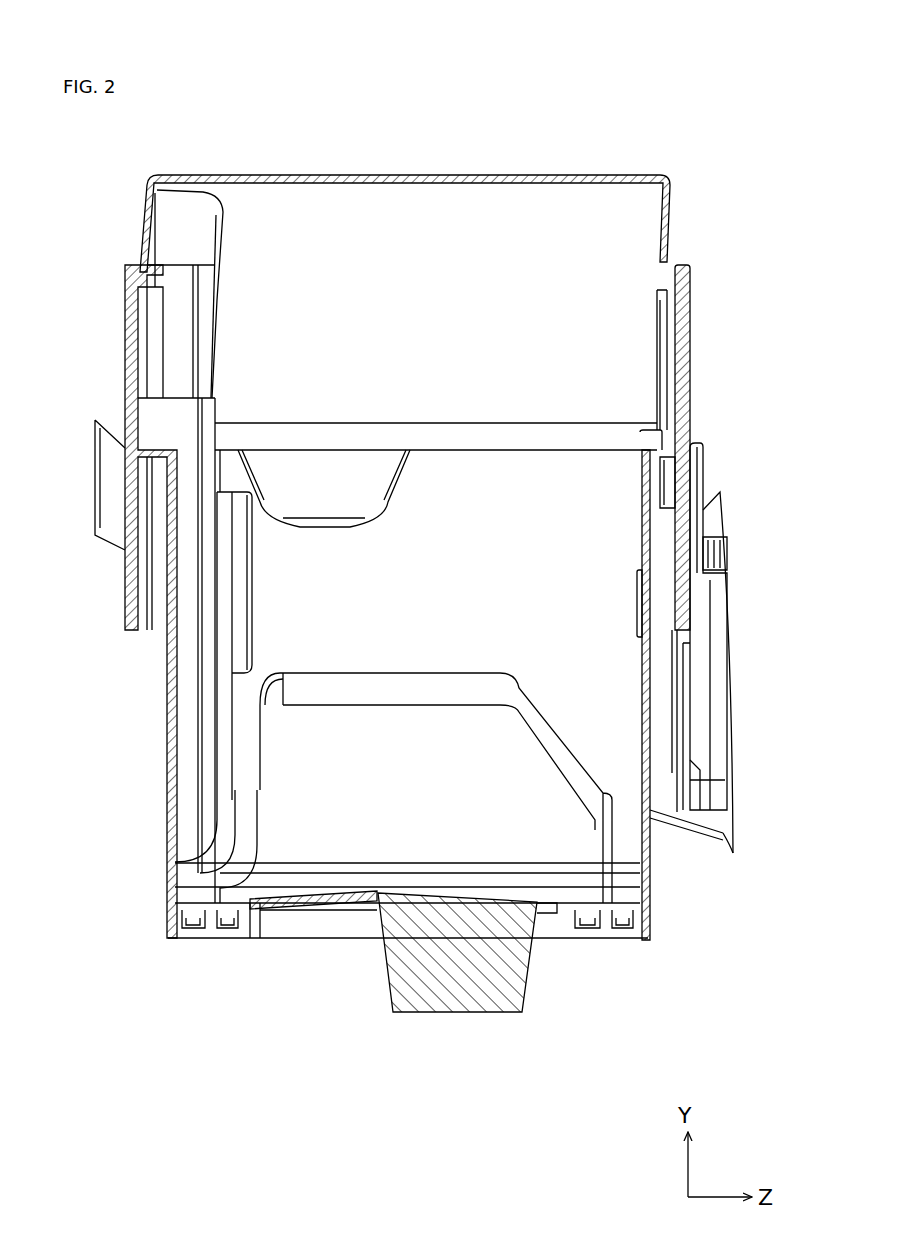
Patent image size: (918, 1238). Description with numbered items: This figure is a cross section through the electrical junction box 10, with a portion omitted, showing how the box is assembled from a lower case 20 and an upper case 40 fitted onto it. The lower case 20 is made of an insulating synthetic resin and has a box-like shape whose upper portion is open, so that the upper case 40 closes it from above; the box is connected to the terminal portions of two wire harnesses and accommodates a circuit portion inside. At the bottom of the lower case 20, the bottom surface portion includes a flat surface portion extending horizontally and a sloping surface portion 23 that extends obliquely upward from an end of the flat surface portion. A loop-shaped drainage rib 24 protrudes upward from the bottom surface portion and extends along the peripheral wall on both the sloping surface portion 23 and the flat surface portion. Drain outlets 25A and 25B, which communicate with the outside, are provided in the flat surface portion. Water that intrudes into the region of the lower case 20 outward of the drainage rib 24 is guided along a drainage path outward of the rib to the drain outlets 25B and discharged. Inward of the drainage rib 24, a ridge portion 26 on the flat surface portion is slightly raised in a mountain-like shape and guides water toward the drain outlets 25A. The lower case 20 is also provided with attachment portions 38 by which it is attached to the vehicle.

The electrical junction box 10 is at (663, 140).
The lower case 20 is at (168, 723).
The sloping surface portion 23 is at (355, 813).
The drainage rib 24 is at (582, 765).
The drain outlet 25A is at (231, 920).
The drain outlet 25B is at (199, 923).
The ridge portion 26 is at (365, 893).
The attachment portion 38 is at (462, 993).
The upper case 40 is at (250, 178).